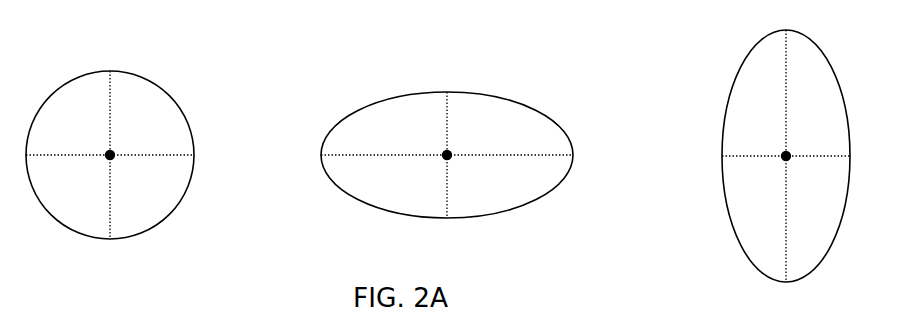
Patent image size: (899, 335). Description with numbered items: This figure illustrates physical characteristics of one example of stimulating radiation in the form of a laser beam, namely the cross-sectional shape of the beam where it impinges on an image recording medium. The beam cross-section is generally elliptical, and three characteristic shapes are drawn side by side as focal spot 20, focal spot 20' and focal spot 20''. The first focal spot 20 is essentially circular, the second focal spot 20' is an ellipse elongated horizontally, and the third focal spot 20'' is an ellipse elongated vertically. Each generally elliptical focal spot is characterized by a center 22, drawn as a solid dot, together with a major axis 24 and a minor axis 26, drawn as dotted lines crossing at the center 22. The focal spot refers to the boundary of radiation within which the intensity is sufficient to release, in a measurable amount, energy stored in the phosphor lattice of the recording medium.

The focal spot 20 is at (110, 143).
The focal spot 20' is at (447, 145).
The focal spot 20'' is at (777, 150).
The center 22 is at (112, 157).
The major axis 24 is at (77, 154).
The minor axis 26 is at (110, 112).